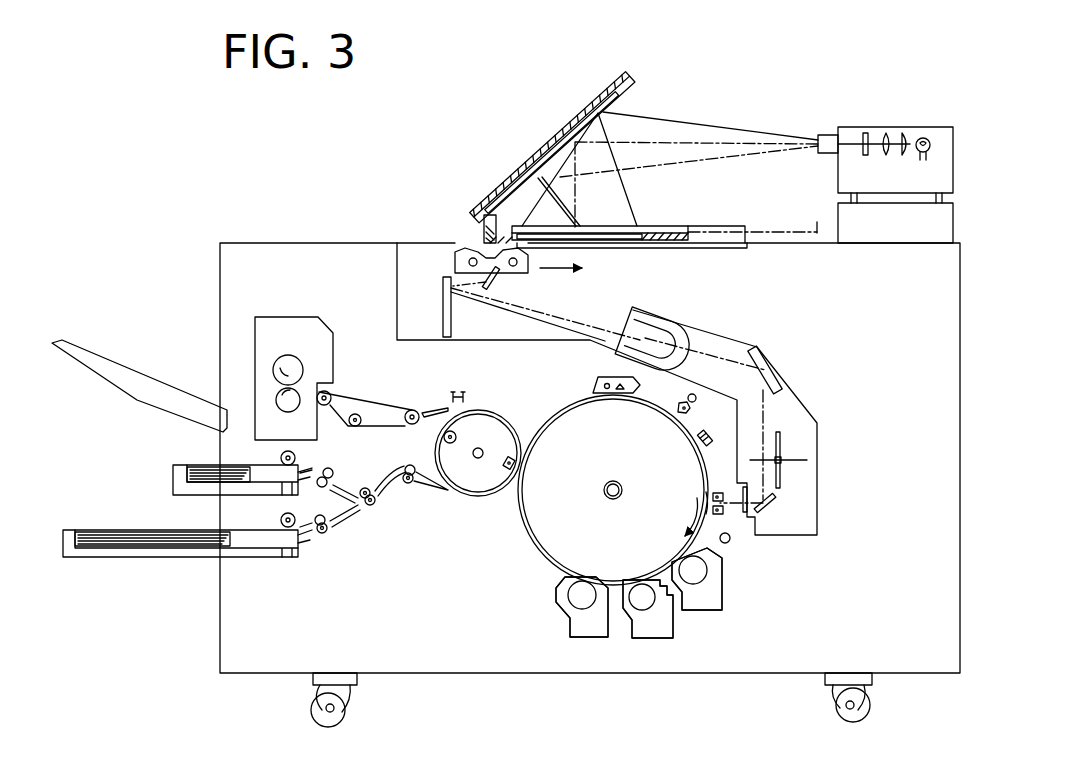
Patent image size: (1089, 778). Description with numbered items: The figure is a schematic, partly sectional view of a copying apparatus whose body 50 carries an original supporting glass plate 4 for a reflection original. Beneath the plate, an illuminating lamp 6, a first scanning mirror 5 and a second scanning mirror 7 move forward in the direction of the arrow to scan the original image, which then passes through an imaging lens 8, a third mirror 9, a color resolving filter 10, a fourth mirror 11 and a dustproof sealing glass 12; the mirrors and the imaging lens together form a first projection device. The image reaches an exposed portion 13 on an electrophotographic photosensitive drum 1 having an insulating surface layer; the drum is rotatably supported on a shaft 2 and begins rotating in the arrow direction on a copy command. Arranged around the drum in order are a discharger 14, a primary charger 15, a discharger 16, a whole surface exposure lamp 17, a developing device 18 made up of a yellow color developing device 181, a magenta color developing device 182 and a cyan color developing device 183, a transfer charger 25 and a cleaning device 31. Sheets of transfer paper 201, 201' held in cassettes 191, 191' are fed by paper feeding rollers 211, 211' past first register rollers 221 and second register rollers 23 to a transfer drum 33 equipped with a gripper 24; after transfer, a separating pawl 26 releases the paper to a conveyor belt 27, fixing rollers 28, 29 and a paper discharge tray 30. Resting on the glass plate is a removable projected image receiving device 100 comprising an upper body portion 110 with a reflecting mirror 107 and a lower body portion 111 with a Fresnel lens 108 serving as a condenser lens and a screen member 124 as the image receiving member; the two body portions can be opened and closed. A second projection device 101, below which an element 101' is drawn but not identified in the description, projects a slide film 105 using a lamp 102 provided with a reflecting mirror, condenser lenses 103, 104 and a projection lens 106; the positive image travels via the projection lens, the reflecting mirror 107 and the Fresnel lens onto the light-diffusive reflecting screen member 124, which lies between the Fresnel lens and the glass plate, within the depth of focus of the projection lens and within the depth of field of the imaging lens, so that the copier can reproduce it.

The electrophotographic photosensitive drum 1 is at (522, 540).
The shaft 2 is at (603, 490).
The original supporting glass plate 4 is at (713, 250).
The first scanning mirror 5 is at (500, 284).
The illuminating lamp 6 is at (483, 257).
The second scanning mirror 7 is at (442, 320).
The imaging lens 8 is at (650, 325).
The third mirror 9 is at (772, 357).
The color resolving filter 10 is at (800, 455).
The fourth mirror 11 is at (768, 504).
The dustproof sealing glass 12 is at (744, 514).
The exposed portion 13 is at (712, 502).
The discharger 14 is at (678, 405).
The primary charger 15 is at (708, 438).
The discharger 16 is at (719, 493).
The whole surface exposure lamp 17 is at (728, 543).
The developing device 18 is at (657, 648).
The second register rollers 23 is at (412, 485).
The gripper 24 is at (456, 437).
The transfer charger 25 is at (505, 470).
The separating pawl 26 is at (430, 410).
The conveyor belt 27 is at (390, 405).
The fixing roller 28 is at (288, 355).
The fixing roller 29 is at (300, 410).
The paper discharge tray 30 is at (135, 372).
The cleaning device 31 is at (596, 385).
The transfer drum 33 is at (506, 414).
The copying apparatus body 50 is at (383, 241).
The projected image receiving device 100 is at (490, 212).
The second projection device 101 is at (952, 160).
The light source support 101' is at (937, 218).
The lamp 102 is at (930, 140).
The condenser lens 103 is at (903, 132).
The condenser lens 104 is at (886, 132).
The slide film 105 is at (865, 132).
The projection lens 106 is at (823, 134).
The reflecting mirror 107 is at (588, 110).
The Fresnel lens 108 is at (732, 202).
The upper body portion 110 is at (634, 80).
The lower body portion 111 is at (692, 228).
The screen member 124 is at (597, 235).
The yellow color developing device 181 is at (724, 597).
The magenta color developing device 182 is at (675, 625).
The cyan color developing device 183 is at (575, 637).
The cassette 191 is at (208, 480).
The cassette 191' is at (177, 575).
The sheets of transfer paper 201 is at (190, 450).
The sheets of transfer paper 201' is at (138, 506).
The paper feeding roller 211 is at (254, 450).
The paper feeding roller 211' is at (253, 515).
The first register rollers 221 is at (333, 470).